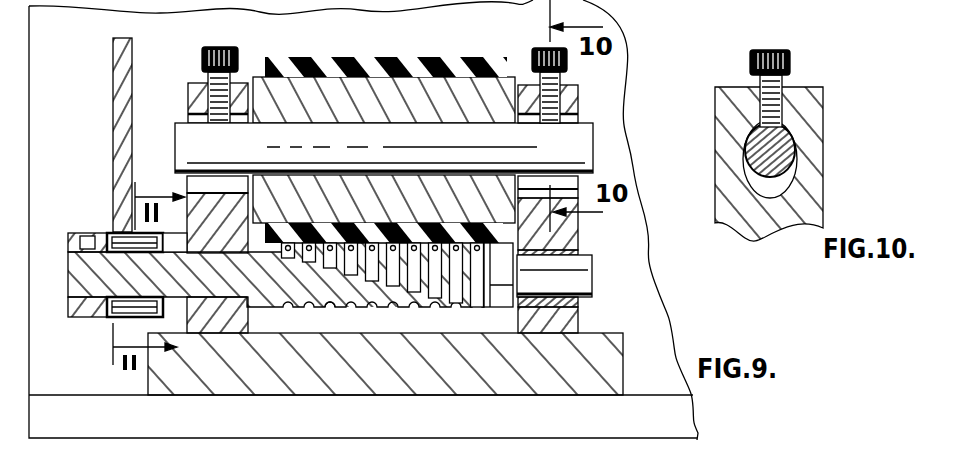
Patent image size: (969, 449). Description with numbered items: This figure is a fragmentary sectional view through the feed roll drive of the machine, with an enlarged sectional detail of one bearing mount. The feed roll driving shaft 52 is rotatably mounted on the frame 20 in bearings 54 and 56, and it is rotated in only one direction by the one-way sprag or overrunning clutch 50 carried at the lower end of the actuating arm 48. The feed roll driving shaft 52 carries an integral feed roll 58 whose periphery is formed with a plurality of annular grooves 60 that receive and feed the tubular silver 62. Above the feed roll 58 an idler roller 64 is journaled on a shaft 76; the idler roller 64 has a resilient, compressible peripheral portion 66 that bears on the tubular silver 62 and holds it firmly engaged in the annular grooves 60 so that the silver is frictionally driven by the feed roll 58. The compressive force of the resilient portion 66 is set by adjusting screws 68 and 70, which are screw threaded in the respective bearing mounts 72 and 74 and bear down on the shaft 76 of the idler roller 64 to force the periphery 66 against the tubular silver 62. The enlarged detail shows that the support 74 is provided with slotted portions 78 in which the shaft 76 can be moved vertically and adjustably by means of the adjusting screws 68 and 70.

In FIG. 9, the frame 20 is at (623, 372).
In FIG. 9, the actuating arm 48 is at (113, 170).
In FIG. 9, the overrunning clutch 50 is at (110, 315).
In FIG. 9, the feed roll driving shaft 52 is at (68, 272).
In FIG. 9, the bearing 54 is at (222, 318).
In FIG. 9, the bearing 56 is at (558, 317).
In FIG. 9, the feed roll 58 is at (362, 292).
In FIG. 9, the annular grooves 60 is at (340, 308).
In FIG. 9, the tubular silver 62 is at (385, 240).
In FIG. 9, the idler roller 64 is at (436, 92).
In FIG. 9, the resilient compressable peripheral portion 66 is at (366, 58).
In FIG. 9, the adjusting screw 68 is at (206, 78).
In FIG. 9, the adjusting screw 70 is at (557, 82).
In FIG. 10, the adjusting screw 70 is at (783, 82).
In FIG. 9, the bearing mount 72 is at (190, 98).
In FIG. 9, the bearing mount 74 is at (580, 100).
In FIG. 10, the bearing mount 74 is at (823, 123).
In FIG. 9, the shaft 76 is at (583, 145).
In FIG. 10, the shaft 76 is at (745, 167).
In FIG. 10, the slotted portions 78 is at (797, 170).